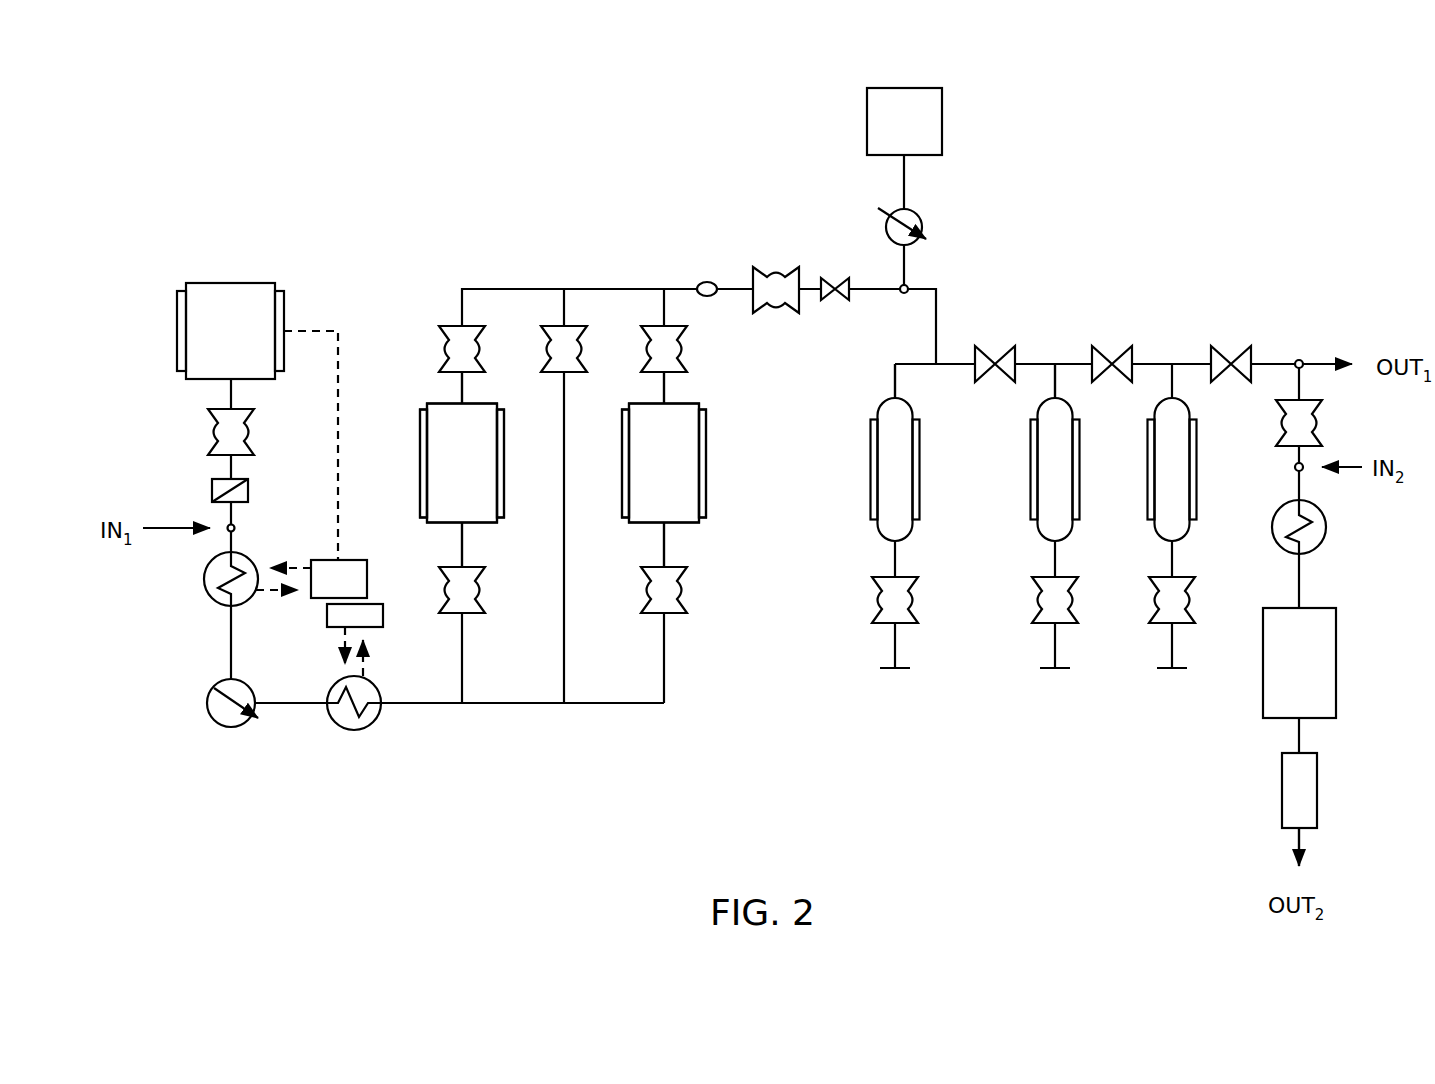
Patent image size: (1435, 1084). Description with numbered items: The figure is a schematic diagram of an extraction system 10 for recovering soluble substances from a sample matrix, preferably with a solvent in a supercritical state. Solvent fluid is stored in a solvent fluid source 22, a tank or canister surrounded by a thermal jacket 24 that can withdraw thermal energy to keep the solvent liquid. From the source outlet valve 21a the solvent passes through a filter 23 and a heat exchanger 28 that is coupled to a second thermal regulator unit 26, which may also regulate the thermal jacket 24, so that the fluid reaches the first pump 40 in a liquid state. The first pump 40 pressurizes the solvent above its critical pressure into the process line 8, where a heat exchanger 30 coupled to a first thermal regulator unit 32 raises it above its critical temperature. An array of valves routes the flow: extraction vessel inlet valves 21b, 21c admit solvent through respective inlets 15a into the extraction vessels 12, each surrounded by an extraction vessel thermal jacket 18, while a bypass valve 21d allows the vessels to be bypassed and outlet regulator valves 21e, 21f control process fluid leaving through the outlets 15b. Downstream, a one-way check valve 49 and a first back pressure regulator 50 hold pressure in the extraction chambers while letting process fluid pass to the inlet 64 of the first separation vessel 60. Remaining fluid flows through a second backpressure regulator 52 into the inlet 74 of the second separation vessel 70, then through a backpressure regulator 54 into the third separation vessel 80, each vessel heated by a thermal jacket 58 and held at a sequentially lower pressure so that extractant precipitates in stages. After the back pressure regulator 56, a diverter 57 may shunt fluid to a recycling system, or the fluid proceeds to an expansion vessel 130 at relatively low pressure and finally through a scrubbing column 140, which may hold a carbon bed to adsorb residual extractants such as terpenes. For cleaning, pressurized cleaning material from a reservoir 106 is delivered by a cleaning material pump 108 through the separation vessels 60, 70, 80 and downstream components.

The extraction system 10 is at (252, 100).
The process line 8 is at (310, 706).
The extraction vessel 12 is at (483, 530).
The inlet 15a is at (462, 535).
The outlet 15b is at (463, 395).
The extraction vessel thermal jacket 18 is at (427, 426).
The source outlet valve 21a is at (210, 422).
The extraction vessel inlet valve 21b is at (484, 592).
The extraction vessel inlet valve 21c is at (686, 592).
The bypass valve 21d is at (556, 326).
The outlet regulator valve 21e is at (441, 338).
The outlet regulator valve 21f is at (656, 326).
The solvent fluid source 22 is at (236, 268).
The filter 23 is at (212, 488).
The thermal jacket 24 is at (179, 313).
The second thermal regulator unit 26 is at (312, 560).
The heat exchanger 28 is at (206, 585).
The heat exchanger 30 is at (373, 722).
The first thermal regulator unit 32 is at (380, 604).
The first pump 40 is at (220, 726).
The one-way check valve 49 is at (707, 282).
The first back pressure regulator 50 is at (836, 278).
The second backpressure regulator 52 is at (1000, 346).
The backpressure regulator 54 is at (1114, 346).
The back pressure regulator 56 is at (1233, 346).
The diverter 57 is at (776, 267).
The thermal jacket 58 is at (920, 452).
The first separation vessel 60 is at (870, 536).
The inlet 64 is at (892, 372).
The second separation vessel 70 is at (1030, 536).
The inlet 74 is at (1052, 380).
The third separation vessel 80 is at (1147, 536).
The reservoir 106 is at (942, 118).
The cleaning material pump 108 is at (921, 222).
The expansion vessel 130 is at (1336, 660).
The scrubbing column 140 is at (1317, 788).